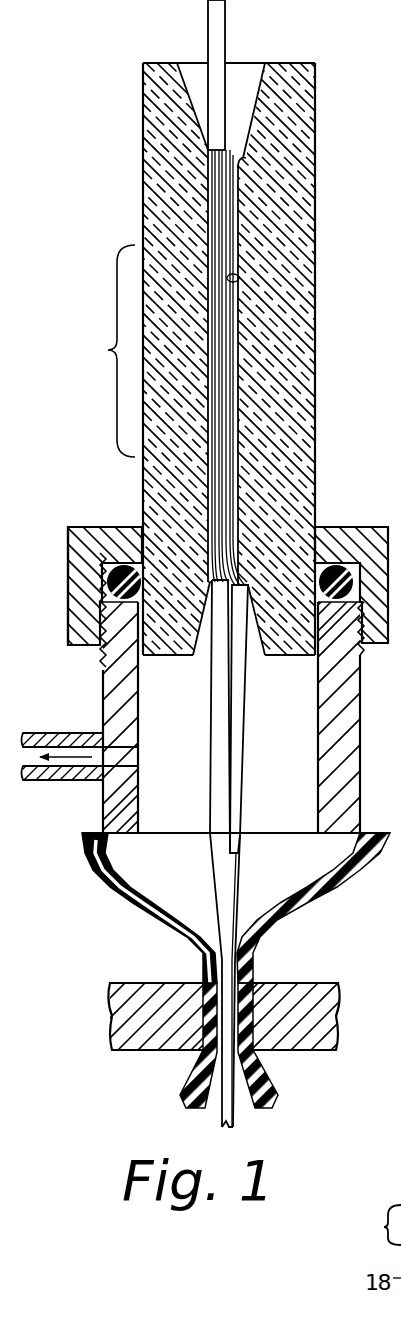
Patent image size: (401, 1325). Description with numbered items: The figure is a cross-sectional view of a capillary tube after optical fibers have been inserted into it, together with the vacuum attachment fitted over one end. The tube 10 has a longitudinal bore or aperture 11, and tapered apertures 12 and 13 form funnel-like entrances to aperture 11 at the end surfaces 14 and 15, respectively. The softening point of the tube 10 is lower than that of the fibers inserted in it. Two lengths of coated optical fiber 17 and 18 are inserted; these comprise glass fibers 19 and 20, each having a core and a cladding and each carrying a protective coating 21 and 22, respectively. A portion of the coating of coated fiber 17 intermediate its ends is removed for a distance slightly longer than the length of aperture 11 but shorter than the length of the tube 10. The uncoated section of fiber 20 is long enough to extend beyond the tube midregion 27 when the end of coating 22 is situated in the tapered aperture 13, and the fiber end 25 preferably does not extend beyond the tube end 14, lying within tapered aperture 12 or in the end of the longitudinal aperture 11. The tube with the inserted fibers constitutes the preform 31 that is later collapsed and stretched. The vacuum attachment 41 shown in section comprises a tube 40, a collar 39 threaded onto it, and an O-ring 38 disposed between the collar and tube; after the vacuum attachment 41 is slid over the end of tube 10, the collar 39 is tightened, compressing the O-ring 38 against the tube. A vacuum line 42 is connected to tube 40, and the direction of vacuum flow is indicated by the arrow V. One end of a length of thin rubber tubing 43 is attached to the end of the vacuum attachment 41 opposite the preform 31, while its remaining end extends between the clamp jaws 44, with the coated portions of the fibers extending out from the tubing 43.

The tube 10 is at (315, 110).
The longitudinal bore or aperture 11 is at (239, 278).
The tapered aperture 12 is at (248, 80).
The tapered aperture 13 is at (263, 645).
The end surface 14 is at (155, 63).
The end surface 15 is at (160, 655).
The coated optical fiber 17 is at (205, 12).
The coated optical fiber 18 is at (242, 846).
The glass fiber 19 is at (218, 373).
The glass fiber 20 is at (228, 398).
The protective coating 21 is at (225, 10).
The protective coating 22 is at (242, 758).
The fiber end 25 is at (240, 162).
The tube midregion 27 is at (98, 351).
The preform 31 is at (143, 130).
The O-ring 38 is at (340, 573).
The collar 39 is at (98, 527).
The tube 40 is at (103, 680).
The vacuum attachment 41 is at (62, 557).
The vacuum line 42 is at (48, 782).
The thin rubber tubing 43 is at (322, 895).
The clamp jaws 44 is at (118, 1012).
The vacuum/flow direction V is at (50, 733).